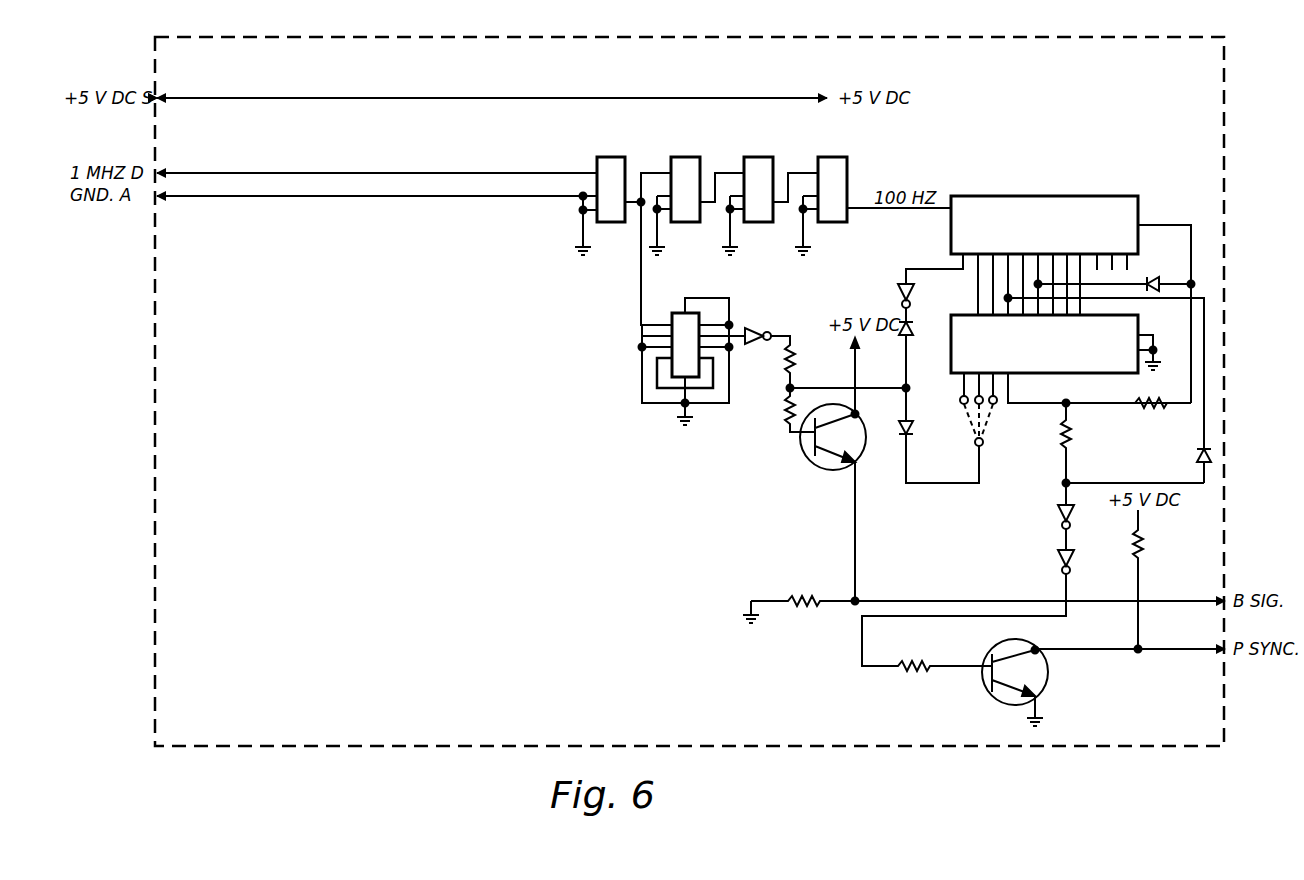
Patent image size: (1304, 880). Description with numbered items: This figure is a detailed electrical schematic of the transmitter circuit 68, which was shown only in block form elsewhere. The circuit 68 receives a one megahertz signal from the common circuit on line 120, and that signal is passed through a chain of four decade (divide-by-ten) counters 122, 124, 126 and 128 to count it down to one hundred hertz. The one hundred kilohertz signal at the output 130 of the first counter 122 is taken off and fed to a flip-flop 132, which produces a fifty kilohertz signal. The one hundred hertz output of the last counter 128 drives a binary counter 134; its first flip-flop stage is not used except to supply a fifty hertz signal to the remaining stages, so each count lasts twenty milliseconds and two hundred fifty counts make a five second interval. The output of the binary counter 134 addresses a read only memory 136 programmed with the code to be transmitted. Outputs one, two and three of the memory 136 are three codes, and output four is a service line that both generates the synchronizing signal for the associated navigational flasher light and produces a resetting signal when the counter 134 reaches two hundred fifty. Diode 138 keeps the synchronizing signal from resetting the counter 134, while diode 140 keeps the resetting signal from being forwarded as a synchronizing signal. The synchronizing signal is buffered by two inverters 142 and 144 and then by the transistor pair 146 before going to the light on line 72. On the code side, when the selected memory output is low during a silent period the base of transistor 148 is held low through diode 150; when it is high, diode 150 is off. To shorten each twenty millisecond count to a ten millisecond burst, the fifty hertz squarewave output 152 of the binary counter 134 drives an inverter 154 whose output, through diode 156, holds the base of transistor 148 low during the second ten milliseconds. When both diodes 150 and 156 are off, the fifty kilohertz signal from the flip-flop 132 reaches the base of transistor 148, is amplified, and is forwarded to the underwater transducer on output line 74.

The transmitter circuit 68 is at (893, 170).
The line to light 72 is at (1178, 660).
The output line 74 is at (1172, 600).
The line 120 is at (495, 168).
The decade counter 122 is at (608, 157).
The decade counter 124 is at (680, 157).
The decade counter 126 is at (758, 157).
The decade counter 128 is at (830, 157).
The output of counter 122 130 is at (640, 280).
The flip-flop 132 is at (680, 362).
The binary counter 134 is at (1071, 299).
The read only memory 136 is at (1048, 399).
The diode 138 is at (1154, 278).
The diode 140 is at (1195, 456).
The inverter 142 is at (1054, 516).
The inverter 144 is at (1054, 560).
The transistor pair 146 is at (985, 692).
The transistor 148 is at (800, 456).
The diode 150 is at (914, 428).
The output of binary counter 134 152 is at (933, 264).
The inverter 154 is at (896, 292).
The diode 156 is at (902, 336).